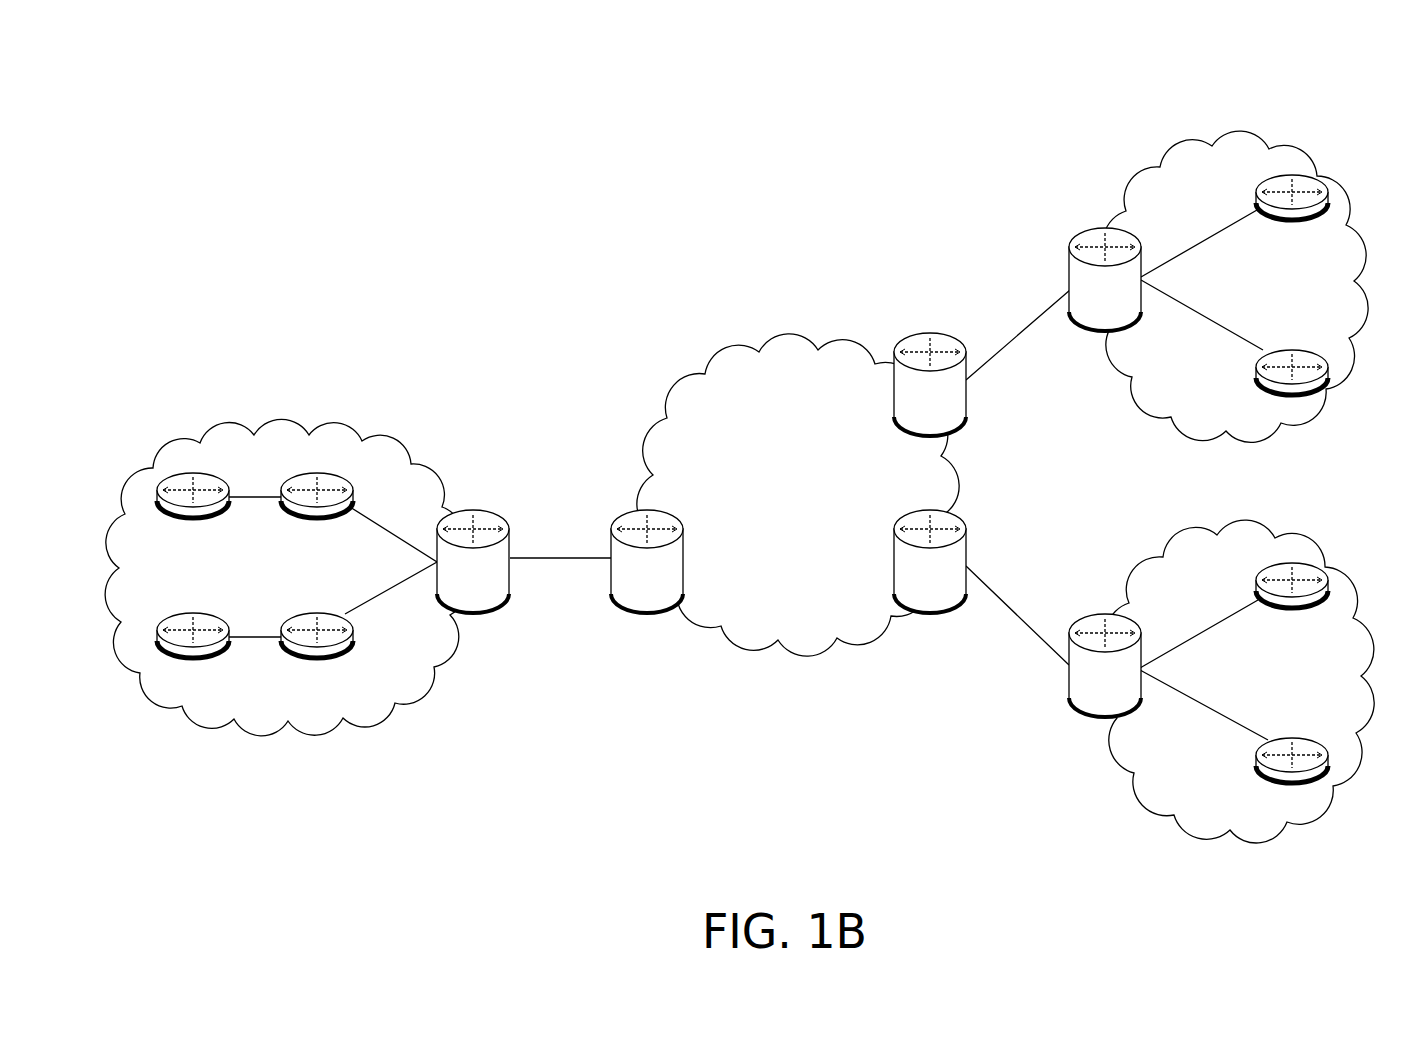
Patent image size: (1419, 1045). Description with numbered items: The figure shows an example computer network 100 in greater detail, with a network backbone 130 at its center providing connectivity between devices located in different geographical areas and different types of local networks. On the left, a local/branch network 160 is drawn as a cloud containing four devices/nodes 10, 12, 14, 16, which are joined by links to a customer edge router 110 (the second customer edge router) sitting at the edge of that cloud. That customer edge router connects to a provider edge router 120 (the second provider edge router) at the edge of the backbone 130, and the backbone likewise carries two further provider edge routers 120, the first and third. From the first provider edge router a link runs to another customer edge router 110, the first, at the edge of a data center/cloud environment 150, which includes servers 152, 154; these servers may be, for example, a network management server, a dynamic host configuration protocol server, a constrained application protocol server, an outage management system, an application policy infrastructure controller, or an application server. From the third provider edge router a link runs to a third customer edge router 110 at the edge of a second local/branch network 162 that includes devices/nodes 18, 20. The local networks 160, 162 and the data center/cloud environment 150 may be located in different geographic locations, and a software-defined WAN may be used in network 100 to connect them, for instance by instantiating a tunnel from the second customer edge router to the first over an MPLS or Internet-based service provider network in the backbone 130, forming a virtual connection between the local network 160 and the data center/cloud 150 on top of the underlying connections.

The computer network 100 is at (1322, 65).
The device/node 10 is at (193, 513).
The device/node 12 is at (317, 513).
The device/node 14 is at (193, 654).
The device/node 16 is at (317, 654).
The device/node 18 is at (1292, 776).
The device/node 20 is at (1292, 601).
The customer edge router 110 is at (789, 472).
The provider edge router 120 is at (788, 473).
The network backbone 130 is at (775, 517).
The data center/cloud environment 150 is at (1189, 146).
The server 152 is at (1292, 213).
The server 154 is at (1292, 389).
The local/branch network 160 is at (330, 406).
The local/branch network 162 is at (1113, 772).